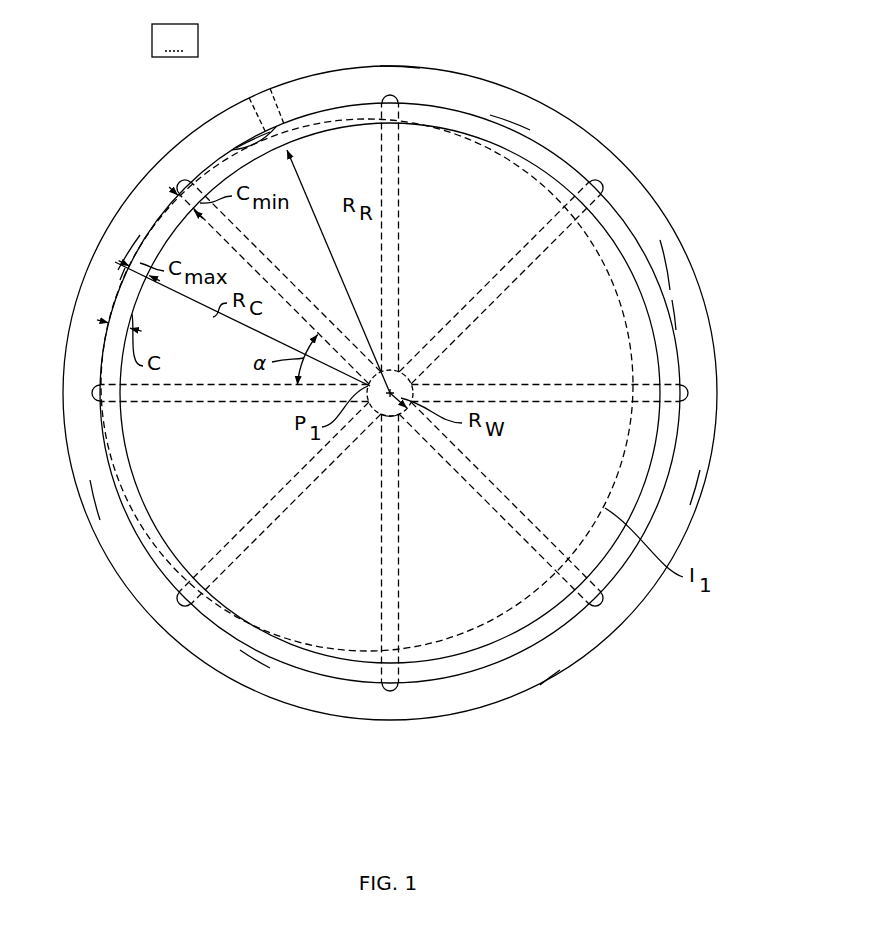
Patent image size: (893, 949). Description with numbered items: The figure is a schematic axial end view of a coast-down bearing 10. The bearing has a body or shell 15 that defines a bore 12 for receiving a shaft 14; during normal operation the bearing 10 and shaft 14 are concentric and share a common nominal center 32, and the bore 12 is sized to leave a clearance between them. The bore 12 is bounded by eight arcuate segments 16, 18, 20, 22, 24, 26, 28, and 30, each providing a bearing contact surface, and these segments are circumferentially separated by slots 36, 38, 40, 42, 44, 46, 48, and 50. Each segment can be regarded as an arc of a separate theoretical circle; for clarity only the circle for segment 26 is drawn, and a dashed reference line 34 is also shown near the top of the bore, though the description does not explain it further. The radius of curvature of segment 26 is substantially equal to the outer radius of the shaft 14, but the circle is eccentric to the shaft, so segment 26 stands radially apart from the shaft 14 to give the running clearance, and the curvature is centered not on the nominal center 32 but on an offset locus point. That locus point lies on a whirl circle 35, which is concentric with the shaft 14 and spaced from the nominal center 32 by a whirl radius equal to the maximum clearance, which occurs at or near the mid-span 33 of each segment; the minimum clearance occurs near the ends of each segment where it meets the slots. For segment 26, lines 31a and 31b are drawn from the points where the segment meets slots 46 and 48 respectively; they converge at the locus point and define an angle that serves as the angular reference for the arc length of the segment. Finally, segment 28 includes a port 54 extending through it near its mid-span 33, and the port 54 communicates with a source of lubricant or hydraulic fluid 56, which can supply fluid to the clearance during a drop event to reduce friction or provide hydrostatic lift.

The coast-down bearing 10 is at (672, 236).
The bore 12 is at (627, 226).
The shaft 14 is at (526, 183).
The body or shell 15 is at (680, 268).
The segment 16 is at (673, 318).
The segment 18 is at (690, 500).
The segment 20 is at (553, 662).
The segment 22 is at (258, 658).
The segment 24 is at (93, 503).
The segment 26 is at (130, 253).
The segment 28 is at (302, 110).
The segment 30 is at (510, 123).
The line 31a is at (218, 385).
The line 31b is at (257, 270).
The nominal center 32 is at (397, 371).
The mid-span 33 is at (240, 147).
The inner member outer surface 34 is at (312, 120).
The whirl circle 35 is at (398, 417).
The slot 36 is at (603, 185).
The slot 38 is at (690, 389).
The slot 40 is at (602, 603).
The slot 42 is at (398, 692).
The slot 44 is at (180, 603).
The slot 46 is at (92, 390).
The slot 48 is at (183, 184).
The slot 50 is at (400, 72).
The port 54 is at (247, 127).
The source of lubricant or hydraulic fluid 56 is at (175, 40).